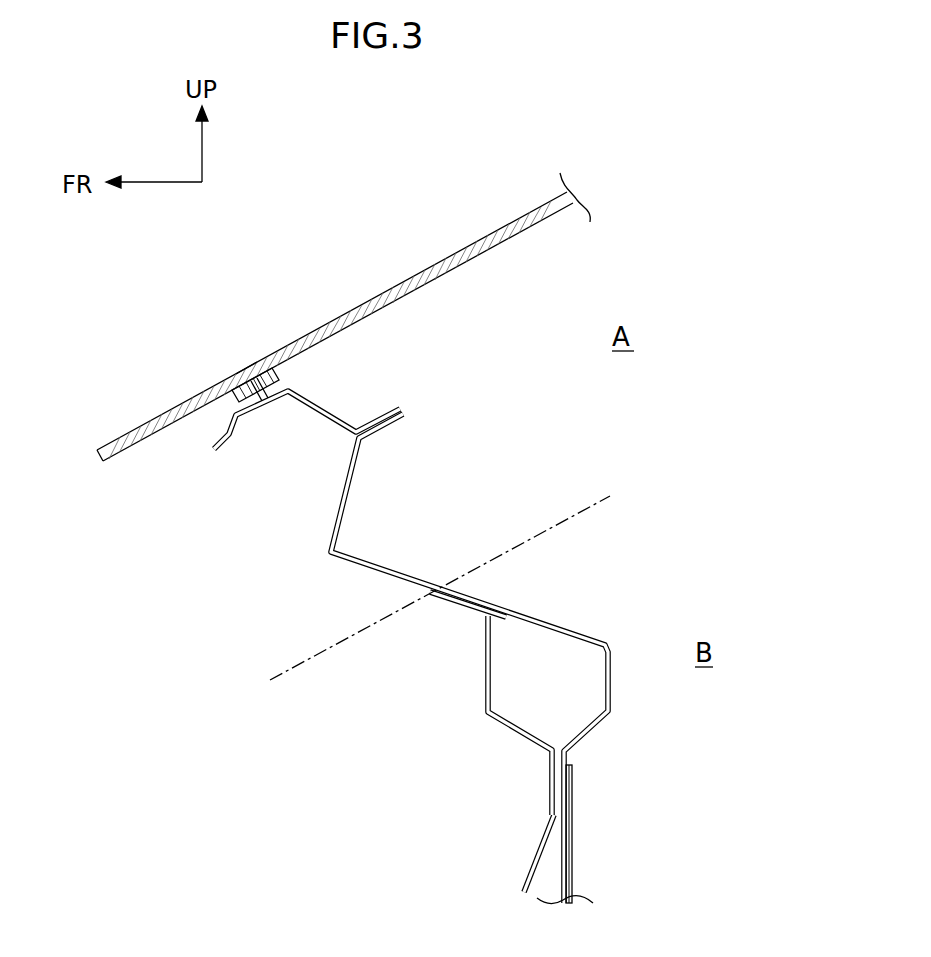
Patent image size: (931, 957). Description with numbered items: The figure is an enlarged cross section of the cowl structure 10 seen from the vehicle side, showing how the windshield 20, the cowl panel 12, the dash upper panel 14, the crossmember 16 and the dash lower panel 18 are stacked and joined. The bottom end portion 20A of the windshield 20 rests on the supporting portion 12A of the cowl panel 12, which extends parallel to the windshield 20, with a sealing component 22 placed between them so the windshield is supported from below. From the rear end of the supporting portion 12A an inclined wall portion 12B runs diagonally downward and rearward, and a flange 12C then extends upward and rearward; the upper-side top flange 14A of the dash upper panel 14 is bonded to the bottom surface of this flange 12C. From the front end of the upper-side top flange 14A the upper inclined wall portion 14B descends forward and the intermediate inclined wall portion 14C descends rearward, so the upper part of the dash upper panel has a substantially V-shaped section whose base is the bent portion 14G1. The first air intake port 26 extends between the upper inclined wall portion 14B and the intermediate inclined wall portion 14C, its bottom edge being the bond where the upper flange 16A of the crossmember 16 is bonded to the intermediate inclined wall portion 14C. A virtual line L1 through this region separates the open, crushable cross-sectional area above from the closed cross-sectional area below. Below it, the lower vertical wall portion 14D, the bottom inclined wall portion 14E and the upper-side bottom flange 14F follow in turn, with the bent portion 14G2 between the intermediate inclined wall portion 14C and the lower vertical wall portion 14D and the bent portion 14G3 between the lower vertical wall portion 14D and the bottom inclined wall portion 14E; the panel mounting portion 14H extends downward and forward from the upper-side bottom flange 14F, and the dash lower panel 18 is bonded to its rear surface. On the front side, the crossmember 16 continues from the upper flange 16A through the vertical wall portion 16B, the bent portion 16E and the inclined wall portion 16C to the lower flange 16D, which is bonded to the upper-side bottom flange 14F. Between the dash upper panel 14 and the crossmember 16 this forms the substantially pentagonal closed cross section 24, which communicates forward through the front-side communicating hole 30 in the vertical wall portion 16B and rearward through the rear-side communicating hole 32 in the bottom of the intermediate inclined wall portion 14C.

The vehicle front structure 10 is at (722, 323).
The cowl panel 12 is at (338, 408).
The supporting portion 12A is at (238, 428).
The inclined wall portion 12B is at (312, 410).
The flange 12C is at (392, 404).
The dash upper panel 14 is at (417, 578).
The upper-side top flange 14A is at (398, 430).
The upper inclined wall portion 14B is at (328, 510).
The intermediate inclined wall portion 14C is at (497, 602).
The lower vertical wall portion 14D is at (615, 680).
The bottom inclined wall portion 14E is at (590, 735).
The upper-side bottom flange 14F is at (570, 793).
The bent portion 14G1 is at (328, 552).
The bent portion 14G2 is at (612, 643).
The bent portion 14G3 is at (607, 720).
The panel mounting portion 14H is at (537, 858).
The crossmember 16 is at (507, 737).
The upper flange 16A is at (460, 605).
The vertical wall portion 16B is at (482, 630).
The inclined wall portion 16C is at (545, 752).
The lower flange 16D is at (550, 793).
The bent portion 16E is at (483, 723).
The dash lower panel 18 is at (575, 868).
The windshield 20 is at (406, 277).
The bottom end portion 20A is at (248, 365).
The sealing component 22 is at (237, 408).
The closed cross section 24 is at (569, 693).
The first air intake port 26 is at (367, 470).
The front-side communicating hole 30 is at (486, 703).
The rear-side communicating hole 32 is at (587, 632).
The virtual line L1 is at (597, 503).